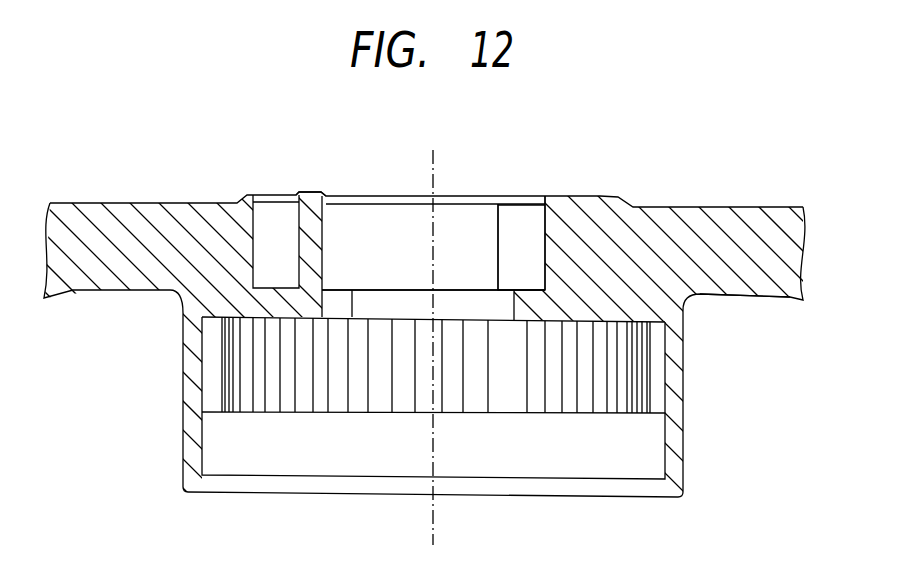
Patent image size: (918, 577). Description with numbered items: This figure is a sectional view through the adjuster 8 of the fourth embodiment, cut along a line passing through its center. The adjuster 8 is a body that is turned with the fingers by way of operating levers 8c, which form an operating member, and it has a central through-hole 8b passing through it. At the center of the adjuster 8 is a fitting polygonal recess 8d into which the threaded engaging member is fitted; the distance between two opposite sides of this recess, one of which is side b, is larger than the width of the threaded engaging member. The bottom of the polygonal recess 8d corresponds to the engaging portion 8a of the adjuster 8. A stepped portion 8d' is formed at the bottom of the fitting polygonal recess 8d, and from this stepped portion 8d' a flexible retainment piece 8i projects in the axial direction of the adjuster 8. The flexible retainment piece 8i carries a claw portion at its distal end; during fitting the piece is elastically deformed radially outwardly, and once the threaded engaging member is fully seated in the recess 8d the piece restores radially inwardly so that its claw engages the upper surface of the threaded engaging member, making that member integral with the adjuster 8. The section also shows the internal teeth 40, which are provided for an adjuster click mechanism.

The adjuster 8 is at (735, 206).
The engaging portion 8a is at (675, 482).
The central through-hole 8b is at (525, 320).
The operating levers 8c is at (787, 288).
The fitting polygonal recess 8d is at (521, 219).
The stepped portion 8d' is at (409, 250).
The flexible retainment piece 8i is at (310, 192).
The side of the recess b is at (257, 245).
The internal teeth 40 is at (250, 387).